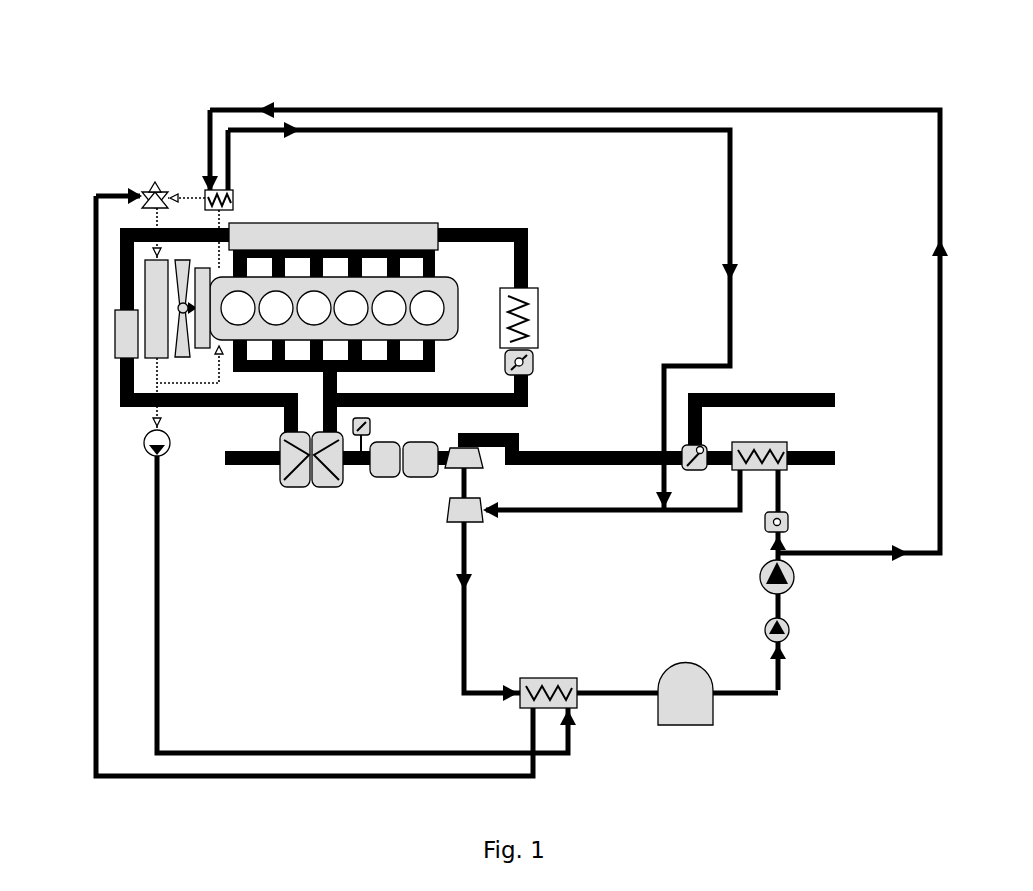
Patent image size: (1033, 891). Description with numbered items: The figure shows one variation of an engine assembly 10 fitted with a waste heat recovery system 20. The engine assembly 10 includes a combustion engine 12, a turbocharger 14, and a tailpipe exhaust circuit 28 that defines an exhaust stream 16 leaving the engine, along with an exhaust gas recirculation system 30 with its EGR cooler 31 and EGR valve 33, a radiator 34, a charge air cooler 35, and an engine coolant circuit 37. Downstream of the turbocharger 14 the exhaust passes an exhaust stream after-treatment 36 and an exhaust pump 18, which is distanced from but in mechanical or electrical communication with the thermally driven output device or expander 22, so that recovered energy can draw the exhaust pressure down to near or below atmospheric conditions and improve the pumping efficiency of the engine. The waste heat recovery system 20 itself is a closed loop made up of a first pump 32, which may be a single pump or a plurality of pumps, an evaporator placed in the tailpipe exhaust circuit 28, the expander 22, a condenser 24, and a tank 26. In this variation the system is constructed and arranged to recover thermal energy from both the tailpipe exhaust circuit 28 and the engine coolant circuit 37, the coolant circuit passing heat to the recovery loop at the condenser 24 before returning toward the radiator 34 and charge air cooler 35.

The engine assembly 10 is at (495, 183).
The combustion engine 12 is at (370, 223).
The turbocharger 14 is at (291, 470).
The exhaust stream 16 is at (535, 450).
The exhaust pump 18 is at (456, 470).
The waste heat recovery system 20 is at (478, 95).
The expander 22 is at (462, 510).
The condenser 24 is at (550, 678).
The tank 26 is at (695, 712).
The tailpipe exhaust circuit 28 is at (820, 450).
The exhaust gas recirculation system 30 is at (538, 292).
The EGR cooler 31 is at (540, 306).
The first pump 32 is at (792, 634).
The EGR valve 33 is at (540, 350).
The radiator 34 is at (156, 290).
The charge air cooler 35 is at (127, 337).
The exhaust stream after-treatment 36 is at (420, 455).
The engine coolant circuit 37 is at (235, 212).